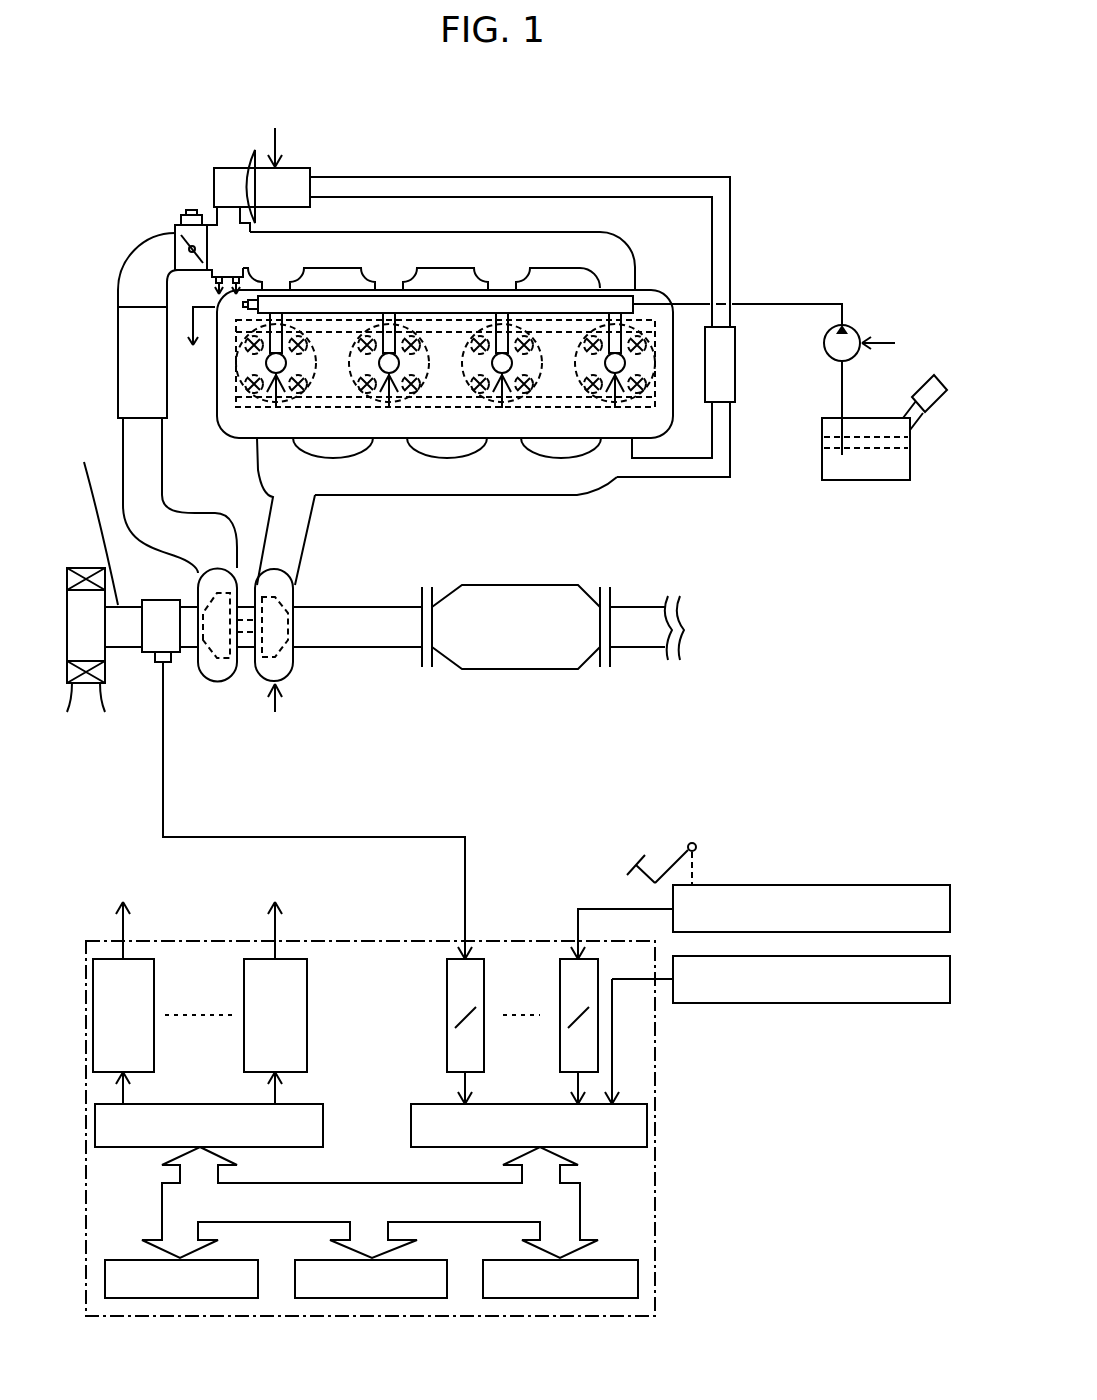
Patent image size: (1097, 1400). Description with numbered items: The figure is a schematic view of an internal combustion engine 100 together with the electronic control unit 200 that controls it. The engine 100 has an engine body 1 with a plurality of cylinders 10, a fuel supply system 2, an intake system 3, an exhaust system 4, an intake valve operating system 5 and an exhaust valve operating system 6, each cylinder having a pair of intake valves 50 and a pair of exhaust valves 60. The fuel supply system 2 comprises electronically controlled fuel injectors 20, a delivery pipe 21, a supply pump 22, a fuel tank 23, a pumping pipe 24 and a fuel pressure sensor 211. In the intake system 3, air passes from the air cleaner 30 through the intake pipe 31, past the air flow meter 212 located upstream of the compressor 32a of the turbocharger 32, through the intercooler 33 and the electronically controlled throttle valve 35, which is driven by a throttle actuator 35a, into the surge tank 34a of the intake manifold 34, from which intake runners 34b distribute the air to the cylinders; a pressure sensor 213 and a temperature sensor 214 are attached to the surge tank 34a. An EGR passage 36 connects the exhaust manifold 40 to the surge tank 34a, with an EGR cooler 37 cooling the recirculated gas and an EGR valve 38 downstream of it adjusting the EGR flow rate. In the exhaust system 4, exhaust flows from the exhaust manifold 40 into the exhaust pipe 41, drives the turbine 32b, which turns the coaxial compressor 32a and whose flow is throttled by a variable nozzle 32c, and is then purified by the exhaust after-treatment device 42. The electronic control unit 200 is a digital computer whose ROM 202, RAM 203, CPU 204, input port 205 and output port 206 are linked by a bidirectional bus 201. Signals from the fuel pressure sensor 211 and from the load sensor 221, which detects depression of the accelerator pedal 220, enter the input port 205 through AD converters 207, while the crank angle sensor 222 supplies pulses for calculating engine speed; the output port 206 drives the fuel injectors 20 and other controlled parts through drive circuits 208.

The engine body 1 is at (665, 298).
The fuel supply system 2 is at (816, 294).
The intake system 3 is at (77, 295).
The exhaust system 4 is at (565, 520).
The intake valve operating system 5 is at (670, 330).
The exhaust valve operating system 6 is at (645, 380).
The cylinders 10 is at (660, 330).
The fuel injectors 20 is at (605, 362).
The delivery pipe 21 is at (612, 298).
The supply pump 22 is at (856, 328).
The fuel tank 23 is at (878, 482).
The pumping pipe 24 is at (755, 303).
The air cleaner 30 is at (104, 692).
The intake pipe 31 is at (122, 483).
The turbocharger 32 is at (272, 645).
The compressor 32a is at (230, 688).
The turbine 32b is at (290, 688).
The variable nozzle 32c is at (262, 622).
The intercooler 33 is at (118, 378).
The intake manifold 34 is at (421, 186).
The surge tank 34a is at (248, 228).
The intake runners 34b is at (483, 232).
The throttle valve 35 is at (142, 202).
The throttle actuator 35a is at (180, 226).
The EGR passage 36 is at (553, 177).
The EGR cooler 37 is at (737, 368).
The EGR valve 38 is at (302, 166).
The exhaust manifold 40 is at (425, 497).
The exhaust pipe 41 is at (303, 545).
The exhaust after-treatment device 42 is at (510, 669).
The intake valves 50 is at (300, 390).
The exhaust valves 60 is at (300, 348).
The internal combustion engine 100 is at (768, 206).
The electronic control unit 200 is at (330, 940).
The bidirectional bus 201 is at (580, 1210).
The ROM 202 is at (195, 1298).
The RAM 203 is at (390, 1298).
The CPU 204 is at (565, 1298).
The input port 205 is at (411, 1104).
The output port 206 is at (318, 1104).
The AD converters 207 is at (560, 977).
The drive circuits 208 is at (244, 965).
The fuel pressure sensor 211 is at (250, 312).
The air flow meter 212 is at (160, 600).
The pressure sensor 213 is at (212, 278).
The temperature sensor 214 is at (250, 288).
The accelerator pedal 220 is at (668, 863).
The load sensor 221 is at (878, 884).
The crank angle sensor 222 is at (905, 1003).